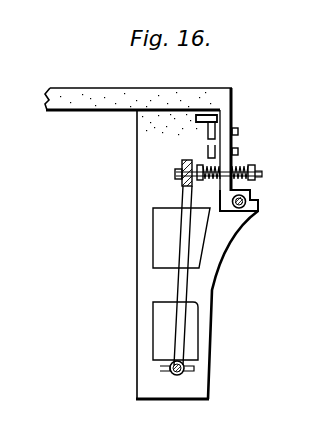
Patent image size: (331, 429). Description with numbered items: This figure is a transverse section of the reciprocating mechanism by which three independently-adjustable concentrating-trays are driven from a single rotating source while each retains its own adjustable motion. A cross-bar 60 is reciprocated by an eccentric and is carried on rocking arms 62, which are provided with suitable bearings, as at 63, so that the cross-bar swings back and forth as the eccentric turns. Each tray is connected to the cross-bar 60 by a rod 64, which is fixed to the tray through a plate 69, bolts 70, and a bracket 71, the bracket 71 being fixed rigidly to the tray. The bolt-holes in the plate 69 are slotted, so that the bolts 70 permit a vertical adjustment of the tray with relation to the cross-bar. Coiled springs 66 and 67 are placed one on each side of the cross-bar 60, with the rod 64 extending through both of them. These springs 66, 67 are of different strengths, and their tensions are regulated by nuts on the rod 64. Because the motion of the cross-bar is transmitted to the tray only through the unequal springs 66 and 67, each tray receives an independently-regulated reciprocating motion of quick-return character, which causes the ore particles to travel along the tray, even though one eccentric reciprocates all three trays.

The cross-bar 60 is at (181, 180).
The rocking arms 62 is at (184, 285).
The bearings 63 is at (176, 375).
The rods 64 is at (262, 172).
The coiled spring 66 is at (208, 179).
The coiled spring 67 is at (249, 197).
The plate 69 is at (225, 118).
The bolts 70 is at (240, 132).
The bracket 71 is at (205, 119).